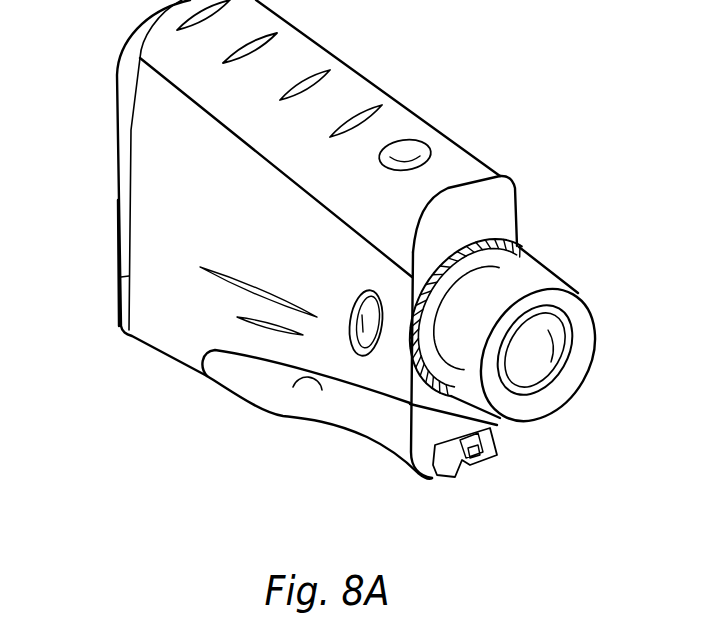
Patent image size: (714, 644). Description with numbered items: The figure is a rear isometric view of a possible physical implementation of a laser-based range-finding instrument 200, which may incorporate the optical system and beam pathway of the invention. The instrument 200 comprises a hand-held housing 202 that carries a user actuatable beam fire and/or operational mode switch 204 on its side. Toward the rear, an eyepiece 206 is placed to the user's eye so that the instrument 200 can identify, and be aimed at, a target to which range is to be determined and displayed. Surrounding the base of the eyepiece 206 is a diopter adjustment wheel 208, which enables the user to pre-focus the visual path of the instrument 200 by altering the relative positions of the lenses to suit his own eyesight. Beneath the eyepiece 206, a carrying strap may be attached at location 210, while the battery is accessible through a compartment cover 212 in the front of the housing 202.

The laser-based range-finding instrument 200 is at (288, 494).
The hand-held housing 202 is at (326, 53).
The beam fire and/or operational mode switch 204 is at (373, 306).
The eyepiece 206 is at (537, 436).
The diopter adjustment wheel 208 is at (523, 256).
The carrying strap attachment location 210 is at (470, 468).
The compartment cover 212 is at (121, 312).